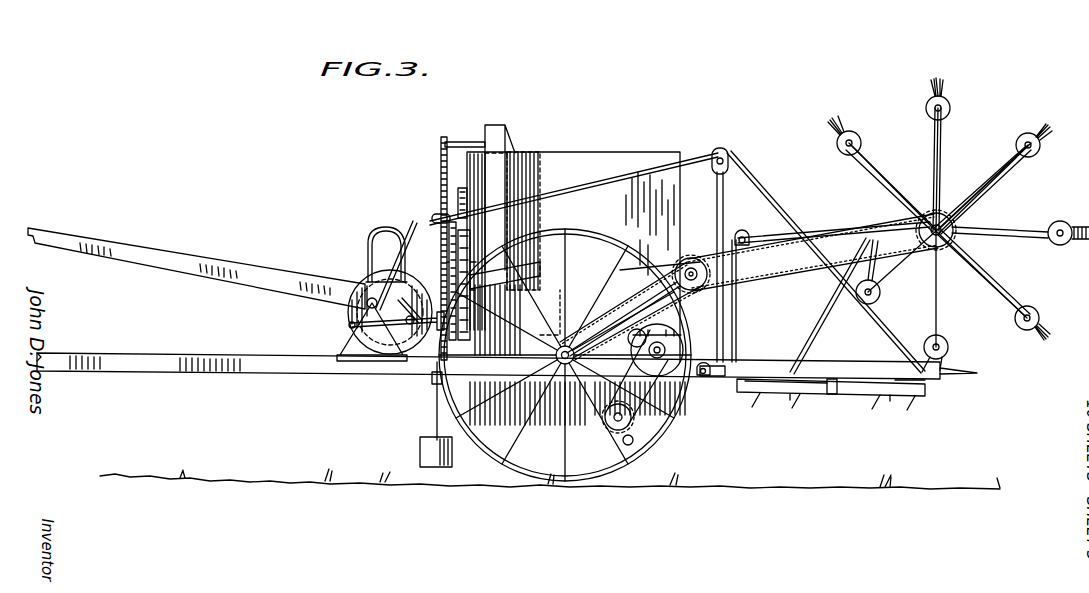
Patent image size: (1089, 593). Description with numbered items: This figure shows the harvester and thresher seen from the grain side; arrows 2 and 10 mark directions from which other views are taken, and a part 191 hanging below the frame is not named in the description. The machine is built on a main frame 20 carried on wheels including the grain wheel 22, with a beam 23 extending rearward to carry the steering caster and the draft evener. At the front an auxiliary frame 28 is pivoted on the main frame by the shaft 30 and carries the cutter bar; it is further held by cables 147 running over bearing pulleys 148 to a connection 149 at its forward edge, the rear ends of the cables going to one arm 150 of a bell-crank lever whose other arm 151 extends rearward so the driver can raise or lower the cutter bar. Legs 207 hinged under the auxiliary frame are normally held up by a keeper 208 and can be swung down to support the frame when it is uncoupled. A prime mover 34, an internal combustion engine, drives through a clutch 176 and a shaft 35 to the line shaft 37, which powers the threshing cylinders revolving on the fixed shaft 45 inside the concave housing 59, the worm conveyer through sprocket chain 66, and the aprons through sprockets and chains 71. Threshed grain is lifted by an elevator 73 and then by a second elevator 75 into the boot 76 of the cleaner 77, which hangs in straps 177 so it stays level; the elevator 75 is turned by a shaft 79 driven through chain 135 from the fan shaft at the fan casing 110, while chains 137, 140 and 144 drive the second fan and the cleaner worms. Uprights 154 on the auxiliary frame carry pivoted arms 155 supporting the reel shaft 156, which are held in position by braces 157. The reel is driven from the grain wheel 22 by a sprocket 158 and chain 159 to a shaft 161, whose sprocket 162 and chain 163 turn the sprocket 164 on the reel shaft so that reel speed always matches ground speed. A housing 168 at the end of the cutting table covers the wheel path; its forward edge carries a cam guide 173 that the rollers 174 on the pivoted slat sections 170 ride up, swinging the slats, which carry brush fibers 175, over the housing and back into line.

The direction of travel arrow 2 is at (142, 219).
The harvester machine 10 is at (392, 190).
The main frame 20 is at (436, 388).
The grain wheel 22 is at (640, 421).
The beam 23 is at (235, 373).
The auxiliary frame 28 is at (838, 396).
The shaft 30 is at (722, 379).
The prime mover 34 is at (375, 284).
The shaft 35 is at (398, 350).
The line shaft 37 is at (702, 386).
The shaft 45 is at (649, 335).
The housing 59 is at (742, 323).
The sprocket chain 66 is at (632, 446).
The sprockets and chains 71 is at (505, 308).
The elevator 73 is at (590, 300).
The elevator 75 is at (503, 127).
The boot 76 is at (522, 157).
The cleaner 77 is at (598, 167).
The shaft 79 is at (462, 142).
The fan casing 110 is at (456, 196).
The sprocket chain 135 is at (440, 157).
The sprocket chain 137 is at (449, 276).
The sprocket chain 140 is at (449, 253).
The chain 144 is at (450, 291).
The cables 147 is at (757, 197).
The bearing pulleys 148 is at (730, 162).
The cable connection 149 is at (897, 382).
The bell-crank lever arm 150 is at (410, 229).
The bell-crank lever arm 151 is at (222, 270).
The uprights 154 is at (742, 230).
The pivoted arms 155 is at (835, 230).
The reel shaft 156 is at (938, 217).
The braces 157 is at (881, 277).
The sprocket 158 is at (548, 420).
The sprocket chain 159 is at (638, 270).
The shaft 161 is at (693, 258).
The sprocket 162 is at (745, 275).
The chain 163 is at (905, 202).
The sprocket 164 is at (960, 240).
The housing 168 is at (833, 306).
The auxiliary slat sections 170 is at (862, 147).
The track or cam guide 173 is at (930, 350).
The rollers 174 is at (951, 110).
The brush fibers 175 is at (928, 92).
The clutch 176 is at (348, 325).
The straps 177 is at (485, 445).
The weight box 191 is at (418, 452).
The legs 207 is at (790, 397).
The keeper 208 is at (818, 397).